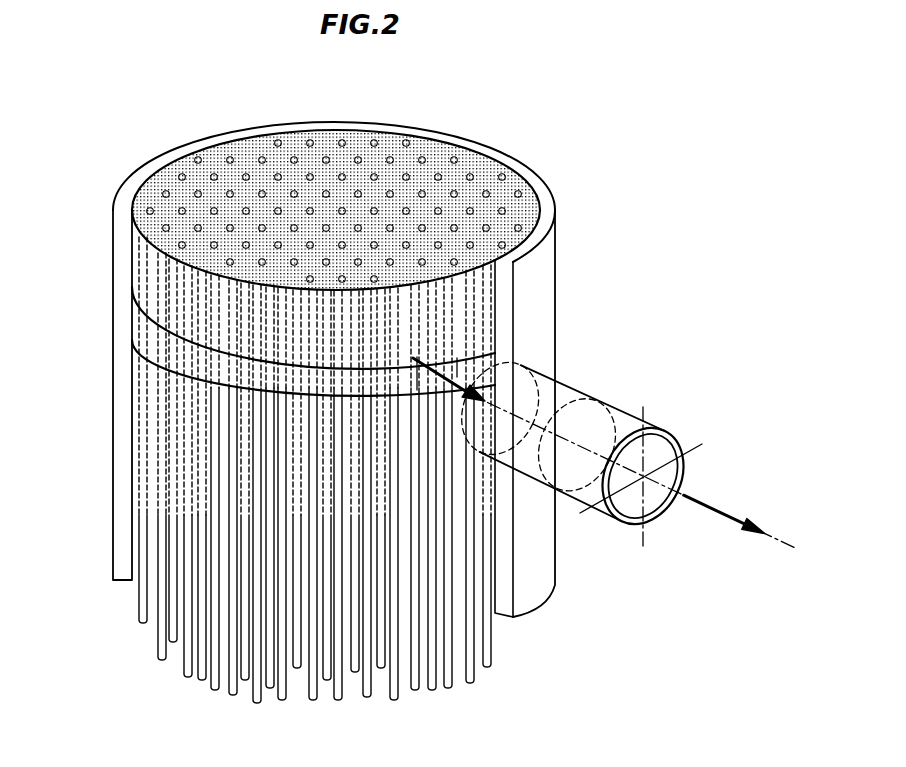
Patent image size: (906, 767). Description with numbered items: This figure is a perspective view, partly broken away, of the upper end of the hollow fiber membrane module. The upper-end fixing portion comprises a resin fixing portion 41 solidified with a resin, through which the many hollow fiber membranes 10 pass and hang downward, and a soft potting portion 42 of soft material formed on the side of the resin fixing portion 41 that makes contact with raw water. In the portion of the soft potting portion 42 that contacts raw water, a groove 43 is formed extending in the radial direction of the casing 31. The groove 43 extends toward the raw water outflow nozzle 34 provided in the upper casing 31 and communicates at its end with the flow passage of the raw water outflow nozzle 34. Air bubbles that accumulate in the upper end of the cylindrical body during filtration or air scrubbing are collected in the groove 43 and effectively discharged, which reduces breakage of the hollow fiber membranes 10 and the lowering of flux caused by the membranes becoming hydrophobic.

The hollow fiber membranes 10 is at (408, 155).
The upper casing 31 is at (551, 307).
The raw water outflow nozzle 34 is at (623, 418).
The resin fixing portion 41 is at (502, 175).
The soft potting portion 42 is at (147, 330).
The groove 43 is at (450, 348).